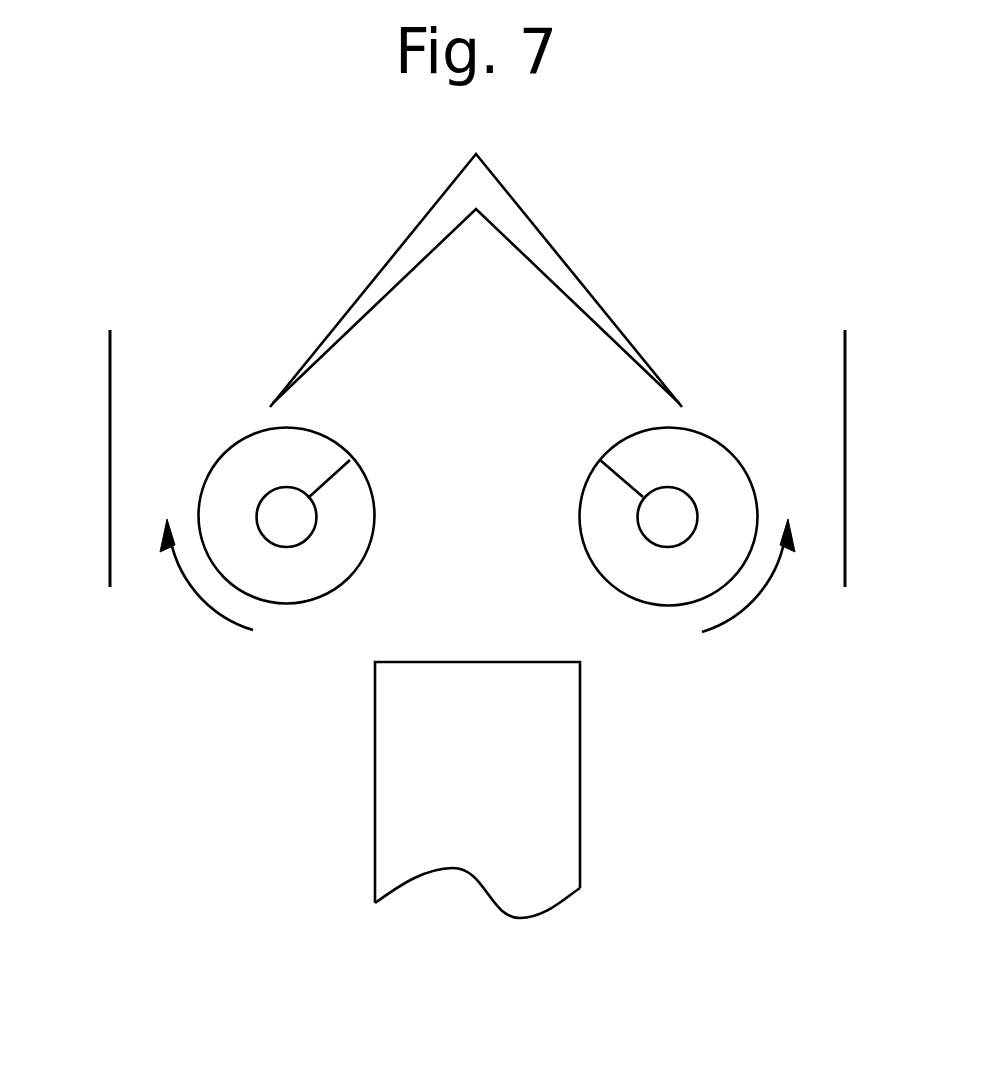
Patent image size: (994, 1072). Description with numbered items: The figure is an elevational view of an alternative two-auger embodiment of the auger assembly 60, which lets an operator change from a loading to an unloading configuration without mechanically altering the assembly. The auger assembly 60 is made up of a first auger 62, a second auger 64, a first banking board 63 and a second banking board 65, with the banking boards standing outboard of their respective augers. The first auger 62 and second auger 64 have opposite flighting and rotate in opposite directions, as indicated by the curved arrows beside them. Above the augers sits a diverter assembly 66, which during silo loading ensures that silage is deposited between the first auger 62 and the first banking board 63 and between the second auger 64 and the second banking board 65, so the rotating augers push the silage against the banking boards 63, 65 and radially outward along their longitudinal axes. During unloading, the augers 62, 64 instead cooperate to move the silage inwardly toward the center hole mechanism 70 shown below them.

The auger assembly 60 is at (198, 712).
The first auger 62 is at (253, 453).
The first banking board 63 is at (110, 443).
The second auger 64 is at (705, 455).
The second banking board 65 is at (845, 443).
The diverter assembly 66 is at (373, 280).
The center hole mechanism 70 is at (567, 735).